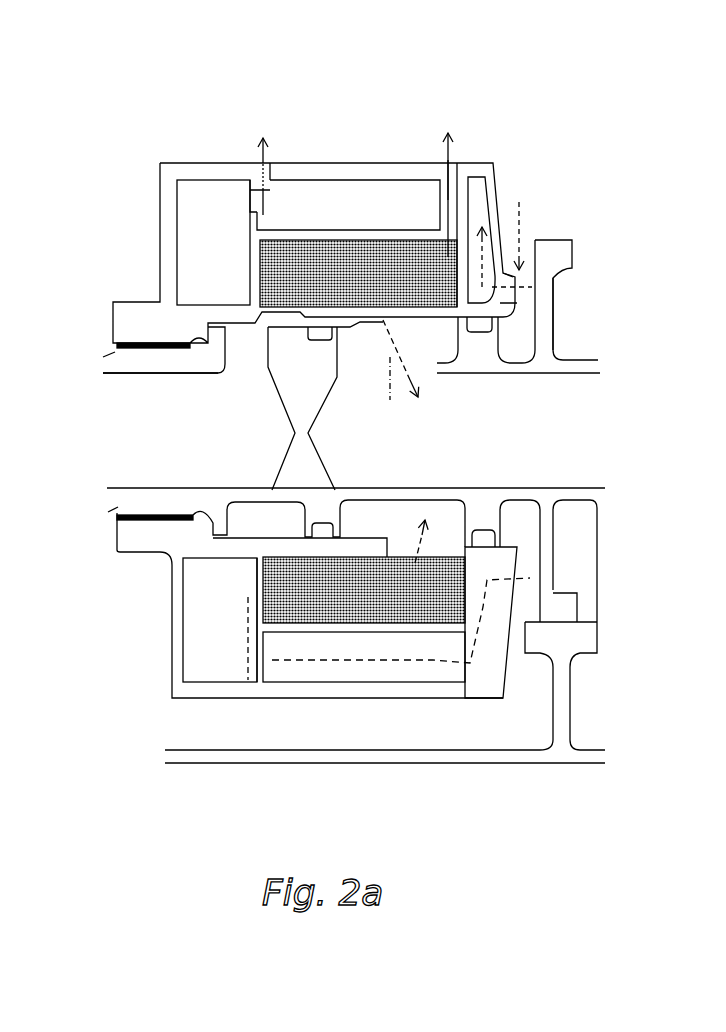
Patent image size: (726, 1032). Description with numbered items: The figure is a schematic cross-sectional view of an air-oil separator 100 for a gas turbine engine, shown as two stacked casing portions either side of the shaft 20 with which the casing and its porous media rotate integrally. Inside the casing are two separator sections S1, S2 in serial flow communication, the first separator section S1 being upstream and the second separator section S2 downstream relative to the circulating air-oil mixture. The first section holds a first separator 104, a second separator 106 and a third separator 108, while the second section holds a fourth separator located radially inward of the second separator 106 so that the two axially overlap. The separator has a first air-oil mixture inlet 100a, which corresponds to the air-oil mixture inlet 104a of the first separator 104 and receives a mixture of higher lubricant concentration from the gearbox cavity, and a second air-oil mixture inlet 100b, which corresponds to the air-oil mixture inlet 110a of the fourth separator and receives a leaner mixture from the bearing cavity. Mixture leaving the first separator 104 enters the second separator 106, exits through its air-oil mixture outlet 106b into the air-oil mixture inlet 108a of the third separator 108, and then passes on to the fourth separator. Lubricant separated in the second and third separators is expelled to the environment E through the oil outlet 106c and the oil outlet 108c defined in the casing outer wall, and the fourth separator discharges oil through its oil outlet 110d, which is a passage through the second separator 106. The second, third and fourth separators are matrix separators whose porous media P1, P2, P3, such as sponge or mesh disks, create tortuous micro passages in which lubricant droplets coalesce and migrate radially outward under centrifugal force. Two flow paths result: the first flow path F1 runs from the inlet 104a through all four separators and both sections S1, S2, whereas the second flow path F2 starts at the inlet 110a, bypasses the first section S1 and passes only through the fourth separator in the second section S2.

The air-oil separator 100 is at (610, 97).
The first air-oil mixture inlet 100a is at (522, 312).
The second air-oil mixture inlet 100b is at (290, 299).
The first separator 104 is at (525, 195).
The air-oil mixture inlet of the first separator 104a is at (513, 282).
The second separator 106 is at (340, 668).
The air-oil mixture outlet of the second separator 106b is at (265, 210).
The oil outlet of the second separator 106c is at (252, 160).
The third separator 108 is at (190, 643).
The air-oil mixture inlet of the third separator 108a is at (243, 205).
The oil outlet of the third separator 108c is at (233, 692).
The air-oil mixture inlet of the fourth separator 110a is at (300, 294).
The oil outlet of the fourth separator 110d is at (443, 195).
The shaft 20 is at (130, 360).
The first separator section S1 is at (178, 148).
The second separator section S2 is at (358, 273).
The porous media P1 is at (396, 655).
The porous media P2 is at (215, 604).
The porous media P3 is at (364, 590).
The first flow path F1 is at (437, 668).
The second flow path F2 is at (407, 355).
The environment E is at (683, 157).